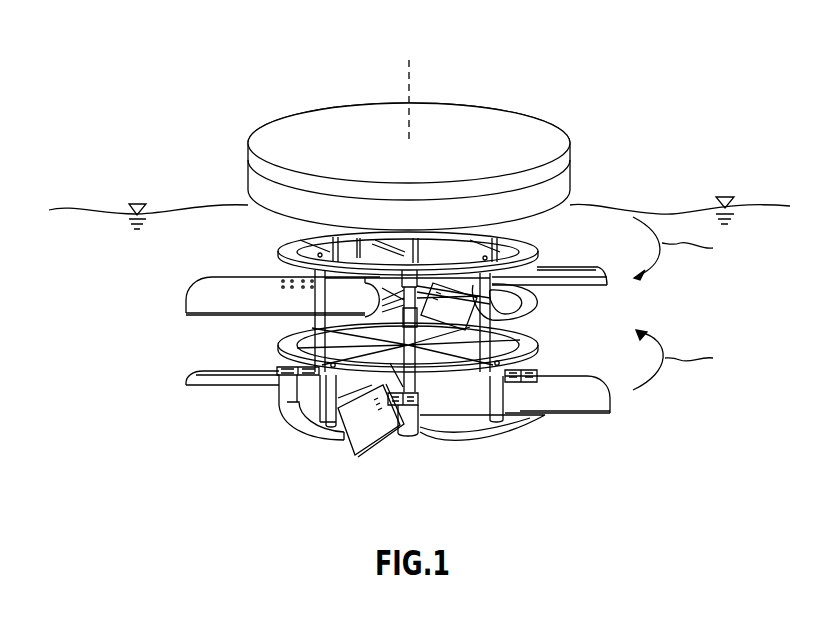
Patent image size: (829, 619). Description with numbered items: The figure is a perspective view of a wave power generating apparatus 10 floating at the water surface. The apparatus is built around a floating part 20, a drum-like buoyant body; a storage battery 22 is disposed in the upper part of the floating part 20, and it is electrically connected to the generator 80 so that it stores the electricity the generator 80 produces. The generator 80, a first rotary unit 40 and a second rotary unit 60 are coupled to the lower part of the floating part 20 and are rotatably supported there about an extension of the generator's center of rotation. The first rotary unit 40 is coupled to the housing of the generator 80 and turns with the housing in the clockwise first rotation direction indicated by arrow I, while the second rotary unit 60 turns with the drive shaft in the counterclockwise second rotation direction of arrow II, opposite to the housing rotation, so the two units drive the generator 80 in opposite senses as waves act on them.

The wave power generating apparatus 10 is at (419, 263).
The floating part 20 is at (445, 166).
The storage battery 22 is at (562, 163).
The first rotary unit 40 is at (548, 242).
The second rotary unit 60 is at (547, 343).
The generator 80 is at (372, 442).